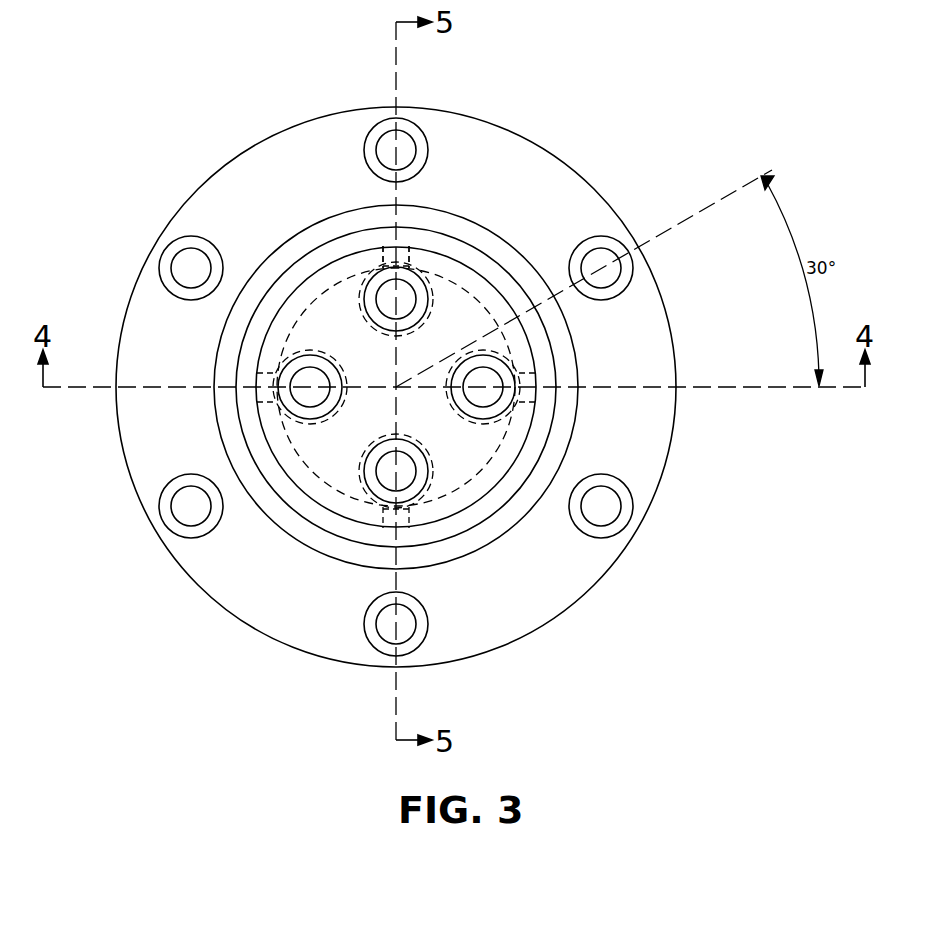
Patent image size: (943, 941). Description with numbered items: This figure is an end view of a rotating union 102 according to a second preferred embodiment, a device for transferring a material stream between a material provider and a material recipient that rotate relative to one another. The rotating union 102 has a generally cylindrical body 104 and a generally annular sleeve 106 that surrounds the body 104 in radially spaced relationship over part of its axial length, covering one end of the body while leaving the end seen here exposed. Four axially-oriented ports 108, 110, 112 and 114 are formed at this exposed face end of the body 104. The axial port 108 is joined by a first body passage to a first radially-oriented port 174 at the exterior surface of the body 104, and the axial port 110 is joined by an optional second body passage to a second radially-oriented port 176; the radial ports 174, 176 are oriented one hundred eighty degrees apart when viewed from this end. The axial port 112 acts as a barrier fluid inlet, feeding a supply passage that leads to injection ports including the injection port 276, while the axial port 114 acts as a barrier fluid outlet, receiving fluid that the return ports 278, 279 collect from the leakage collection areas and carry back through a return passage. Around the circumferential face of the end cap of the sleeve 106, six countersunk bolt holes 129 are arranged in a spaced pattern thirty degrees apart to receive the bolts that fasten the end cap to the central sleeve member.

The rotating union 102 is at (248, 124).
The body 104 is at (300, 284).
The sleeve 106 is at (128, 466).
The axial port 108 is at (282, 367).
The axial port 110 is at (512, 403).
The axial port 112 is at (423, 494).
The axial port 114 is at (410, 293).
The bolt holes 129 is at (410, 140).
The first radially-oriented port 174 is at (258, 398).
The second radially-oriented port 176 is at (530, 392).
The barrier fluid injection port 276 is at (388, 530).
The barrier fluid return port 278 is at (407, 234).
The barrier fluid return port 279 is at (396, 257).